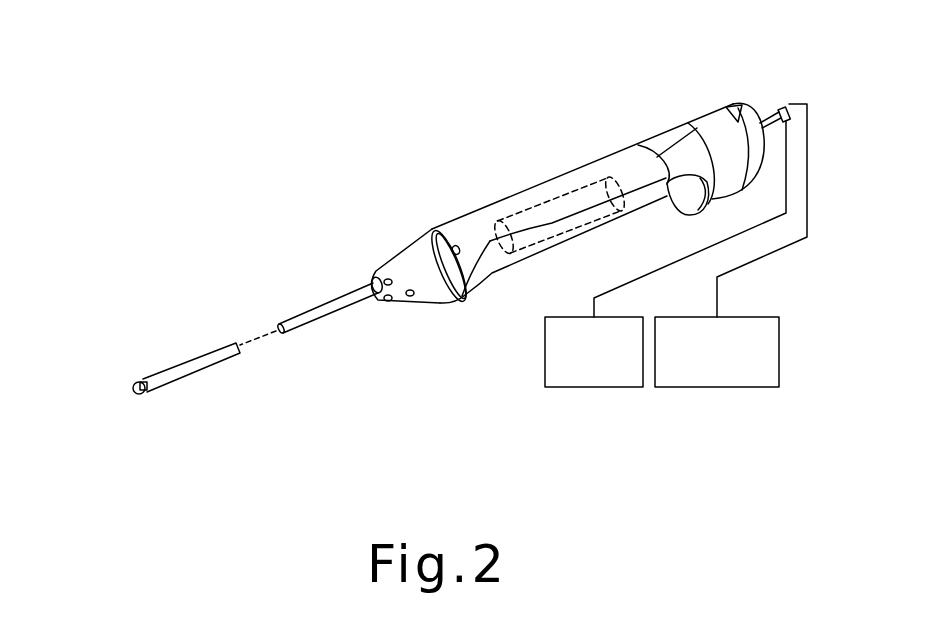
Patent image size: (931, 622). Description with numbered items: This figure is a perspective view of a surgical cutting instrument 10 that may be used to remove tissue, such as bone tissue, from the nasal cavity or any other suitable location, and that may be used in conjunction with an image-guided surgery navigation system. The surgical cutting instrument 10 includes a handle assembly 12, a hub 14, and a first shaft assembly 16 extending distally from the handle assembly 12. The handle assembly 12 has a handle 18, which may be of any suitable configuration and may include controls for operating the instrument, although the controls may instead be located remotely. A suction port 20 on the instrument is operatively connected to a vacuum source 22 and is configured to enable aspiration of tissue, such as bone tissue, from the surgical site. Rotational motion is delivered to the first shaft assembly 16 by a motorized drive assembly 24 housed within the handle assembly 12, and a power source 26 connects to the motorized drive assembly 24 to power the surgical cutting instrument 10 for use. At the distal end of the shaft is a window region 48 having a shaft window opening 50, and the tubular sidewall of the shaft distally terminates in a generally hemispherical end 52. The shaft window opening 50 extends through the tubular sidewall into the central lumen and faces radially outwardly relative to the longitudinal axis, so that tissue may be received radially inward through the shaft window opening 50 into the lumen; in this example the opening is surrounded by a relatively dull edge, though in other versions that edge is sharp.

The surgical cutting instrument 10 is at (677, 72).
The handle assembly 12 is at (550, 179).
The hub 14 is at (403, 269).
The first shaft assembly 16 is at (308, 307).
The handle 18 is at (607, 221).
The suction port 20 is at (780, 108).
The vacuum source 22 is at (733, 317).
The motorized drive assembly 24 is at (542, 247).
The power source 26 is at (545, 350).
The window region 48 is at (134, 352).
The shaft window opening 50 is at (139, 382).
The generally hemispherical end 52 is at (135, 396).